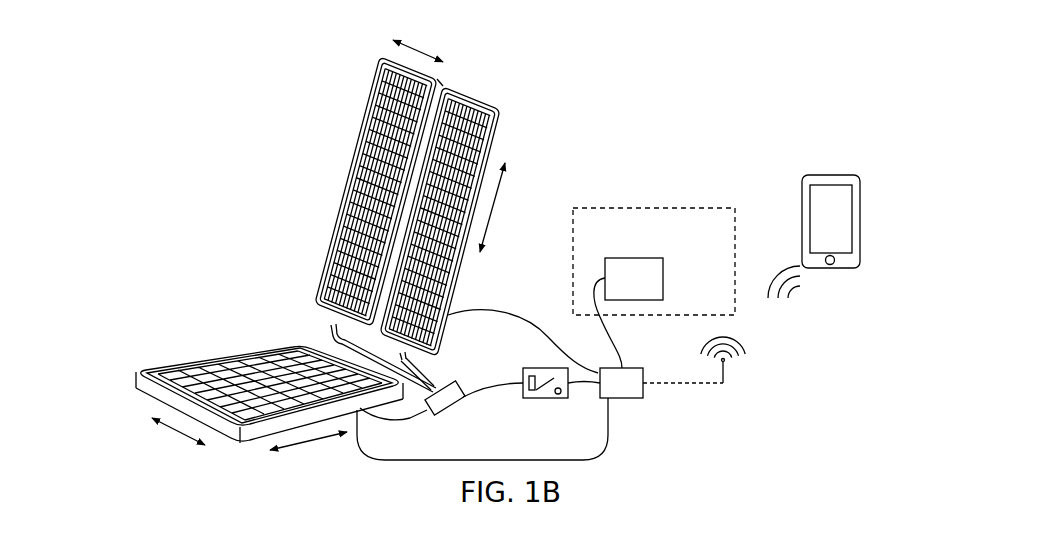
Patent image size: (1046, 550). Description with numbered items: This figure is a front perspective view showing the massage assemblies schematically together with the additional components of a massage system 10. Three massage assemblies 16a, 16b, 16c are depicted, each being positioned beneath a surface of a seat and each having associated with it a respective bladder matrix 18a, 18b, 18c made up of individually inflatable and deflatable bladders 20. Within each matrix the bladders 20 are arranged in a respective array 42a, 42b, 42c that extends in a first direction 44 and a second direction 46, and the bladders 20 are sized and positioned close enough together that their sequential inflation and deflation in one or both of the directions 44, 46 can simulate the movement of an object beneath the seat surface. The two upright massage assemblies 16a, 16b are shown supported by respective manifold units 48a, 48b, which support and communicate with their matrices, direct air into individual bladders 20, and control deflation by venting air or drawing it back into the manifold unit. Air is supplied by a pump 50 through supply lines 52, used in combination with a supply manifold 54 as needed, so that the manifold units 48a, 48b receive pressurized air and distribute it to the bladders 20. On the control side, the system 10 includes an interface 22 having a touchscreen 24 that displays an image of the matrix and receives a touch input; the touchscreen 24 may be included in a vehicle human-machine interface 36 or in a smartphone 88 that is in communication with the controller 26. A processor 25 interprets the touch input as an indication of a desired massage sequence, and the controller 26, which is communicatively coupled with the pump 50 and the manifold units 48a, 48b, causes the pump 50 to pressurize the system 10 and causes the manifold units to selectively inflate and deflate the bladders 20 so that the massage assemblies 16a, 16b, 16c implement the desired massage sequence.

The massage system 10 is at (628, 89).
The first massage assembly 16a is at (375, 50).
The second massage assembly 16b is at (509, 106).
The third massage assembly 16c is at (142, 405).
The first bladder matrix 18a is at (372, 108).
The second bladder matrix 18b is at (493, 137).
The third bladder matrix 18c is at (187, 363).
The inflatable bladders 20 is at (470, 101).
The interface 22 is at (678, 261).
The touchscreen 24 is at (632, 264).
The processor 25 is at (845, 262).
The controller 26 is at (622, 394).
The vehicle human-machine interface 36 is at (614, 218).
The first bladder array 42a is at (340, 256).
The second bladder array 42b is at (452, 268).
The third bladder array 42c is at (256, 400).
The first direction 44 is at (492, 216).
The second direction 46 is at (414, 42).
The first manifold unit 48a is at (438, 82).
The second manifold unit 48b is at (447, 305).
The pump 50 is at (543, 400).
The supply lines 52 is at (495, 382).
The supply manifold 54 is at (462, 413).
The smartphone 88 is at (872, 225).